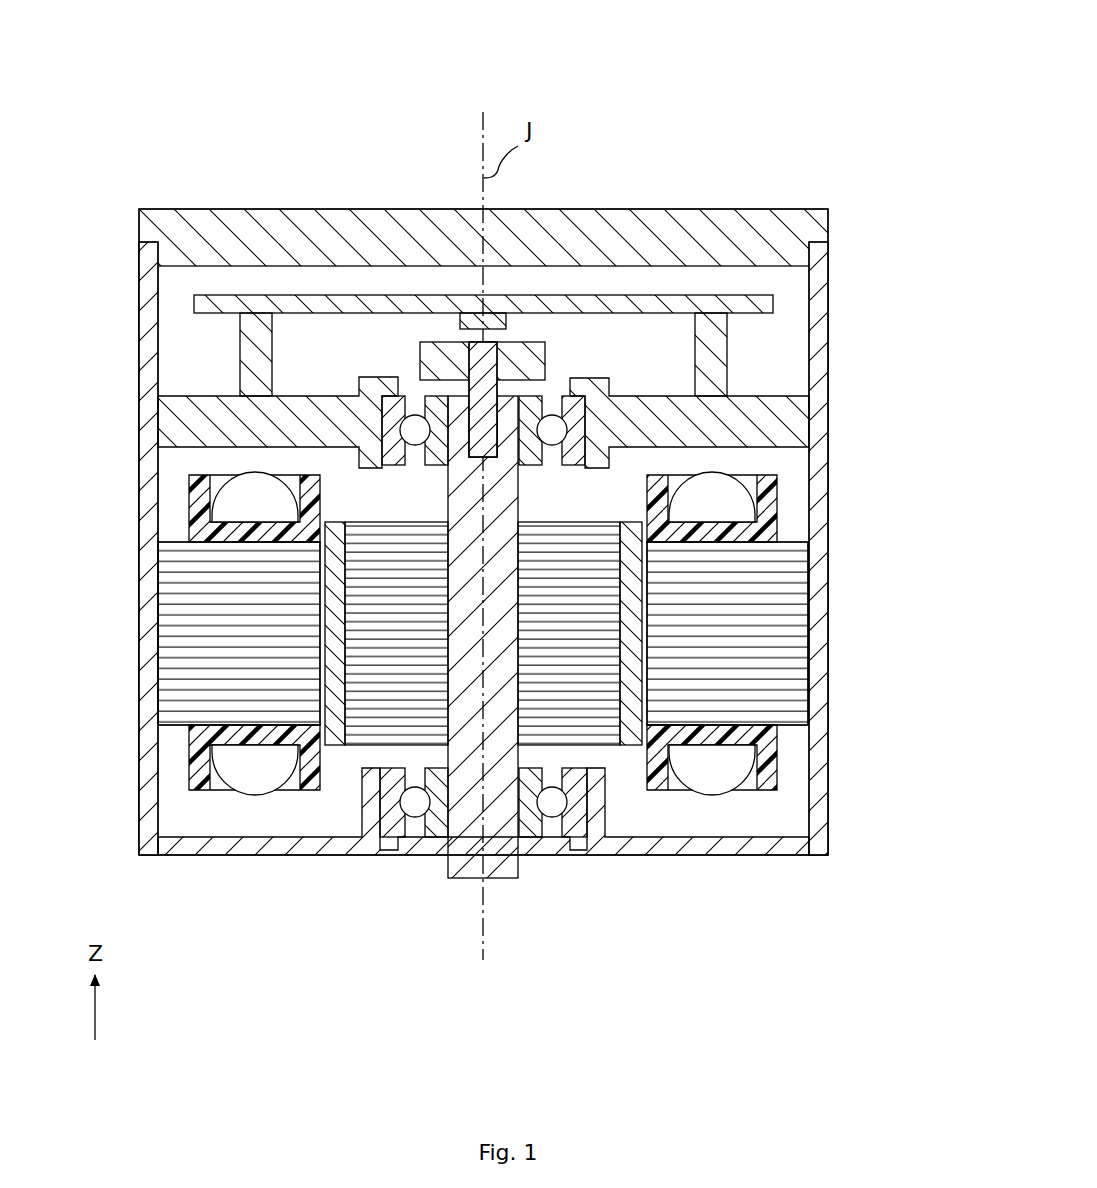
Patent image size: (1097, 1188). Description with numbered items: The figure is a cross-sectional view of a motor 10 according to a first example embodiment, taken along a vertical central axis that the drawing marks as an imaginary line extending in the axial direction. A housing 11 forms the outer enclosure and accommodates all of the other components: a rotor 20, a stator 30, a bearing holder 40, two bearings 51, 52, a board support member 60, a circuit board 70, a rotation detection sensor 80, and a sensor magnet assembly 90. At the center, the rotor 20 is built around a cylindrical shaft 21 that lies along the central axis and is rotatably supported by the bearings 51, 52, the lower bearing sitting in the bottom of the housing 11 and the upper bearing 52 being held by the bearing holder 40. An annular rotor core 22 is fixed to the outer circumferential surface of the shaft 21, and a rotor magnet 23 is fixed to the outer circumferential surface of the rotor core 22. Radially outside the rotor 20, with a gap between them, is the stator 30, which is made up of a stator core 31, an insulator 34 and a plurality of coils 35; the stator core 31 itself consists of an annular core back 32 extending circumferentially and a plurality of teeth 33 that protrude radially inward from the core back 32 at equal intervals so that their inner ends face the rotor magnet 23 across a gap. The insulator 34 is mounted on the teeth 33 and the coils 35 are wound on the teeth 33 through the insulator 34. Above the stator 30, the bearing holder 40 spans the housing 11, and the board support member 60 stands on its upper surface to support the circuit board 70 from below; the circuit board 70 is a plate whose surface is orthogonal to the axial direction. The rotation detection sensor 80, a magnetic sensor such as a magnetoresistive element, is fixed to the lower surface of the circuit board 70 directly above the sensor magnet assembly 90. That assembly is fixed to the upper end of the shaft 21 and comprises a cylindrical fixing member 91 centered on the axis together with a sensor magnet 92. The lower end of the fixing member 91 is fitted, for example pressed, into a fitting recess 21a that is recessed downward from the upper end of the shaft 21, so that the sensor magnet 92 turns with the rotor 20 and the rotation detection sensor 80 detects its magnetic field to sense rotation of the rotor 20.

The motor 10 is at (785, 92).
The housing 11 is at (832, 293).
The rotor 20 is at (429, 689).
The shaft 21 is at (460, 862).
The fitting recess 21a is at (470, 457).
The rotor core 22 is at (376, 725).
The rotor magnet 23 is at (335, 745).
The stator 30 is at (502, 697).
The stator core 31 is at (540, 633).
The core back 32 is at (780, 602).
The teeth 33 is at (718, 668).
The insulator 34 is at (768, 525).
The coils 35 is at (237, 502).
The bearing holder 40 is at (778, 425).
The bearing 51 is at (552, 806).
The bearing 52 is at (413, 440).
The board support member 60 is at (250, 347).
The circuit board 70 is at (681, 305).
The rotation detection sensor 80 is at (507, 320).
The sensor magnet assembly 90 is at (491, 302).
The fixing member 91 is at (495, 405).
The sensor magnet 92 is at (440, 342).